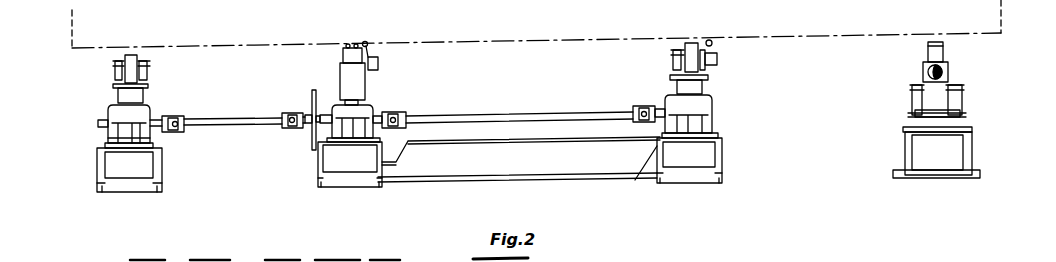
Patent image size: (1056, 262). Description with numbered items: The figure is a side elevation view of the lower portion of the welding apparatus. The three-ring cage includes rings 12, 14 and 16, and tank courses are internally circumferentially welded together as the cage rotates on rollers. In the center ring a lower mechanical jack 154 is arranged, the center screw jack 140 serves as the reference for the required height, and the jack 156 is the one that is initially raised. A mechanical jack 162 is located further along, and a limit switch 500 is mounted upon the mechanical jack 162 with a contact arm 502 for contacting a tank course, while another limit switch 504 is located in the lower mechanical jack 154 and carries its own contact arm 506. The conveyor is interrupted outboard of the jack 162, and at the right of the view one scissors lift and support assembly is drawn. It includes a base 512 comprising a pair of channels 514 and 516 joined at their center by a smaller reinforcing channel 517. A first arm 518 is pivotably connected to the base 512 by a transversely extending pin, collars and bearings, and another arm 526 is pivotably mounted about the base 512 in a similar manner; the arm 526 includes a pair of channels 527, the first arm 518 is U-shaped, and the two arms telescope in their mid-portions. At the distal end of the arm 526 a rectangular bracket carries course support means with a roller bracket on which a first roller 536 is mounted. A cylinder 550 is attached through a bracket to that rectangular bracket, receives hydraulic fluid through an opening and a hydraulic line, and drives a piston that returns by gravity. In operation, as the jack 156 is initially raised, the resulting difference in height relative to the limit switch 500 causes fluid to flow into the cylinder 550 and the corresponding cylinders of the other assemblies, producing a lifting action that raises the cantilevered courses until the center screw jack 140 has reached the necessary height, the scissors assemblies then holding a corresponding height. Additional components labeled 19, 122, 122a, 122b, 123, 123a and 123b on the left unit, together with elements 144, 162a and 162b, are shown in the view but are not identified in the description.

The ring 12 is at (135, 190).
The ring 14 is at (339, 190).
The ring 16 is at (694, 184).
The base support 19 is at (97, 163).
The gear box 122 is at (98, 124).
The gear box collar 122a is at (114, 97).
The gear box stem 122b is at (131, 55).
The drive shaft 123 is at (252, 128).
The drive shaft 123a is at (513, 114).
The universal coupling 123b is at (155, 128).
The center screw jack 140 is at (368, 103).
The mounting plate 144 is at (311, 93).
The lower mechanical jack 154 is at (366, 77).
The jack 156 is at (347, 50).
The mechanical jack 162 is at (712, 100).
The gear box collar 162a is at (677, 90).
The gear box stem 162b is at (693, 43).
The limit switch 500 is at (718, 58).
The contact arm 502 is at (713, 43).
The limit switch 504 is at (379, 61).
The contact arm 506 is at (367, 42).
The base 512 is at (988, 147).
The channel 514 is at (968, 160).
The channel 516 is at (905, 157).
The reinforcing channel 517 is at (910, 128).
The first arm 518 is at (947, 118).
The arm 526 is at (915, 100).
The channels 527 is at (962, 97).
The first roller 536 is at (927, 52).
The cylinder 550 is at (948, 68).